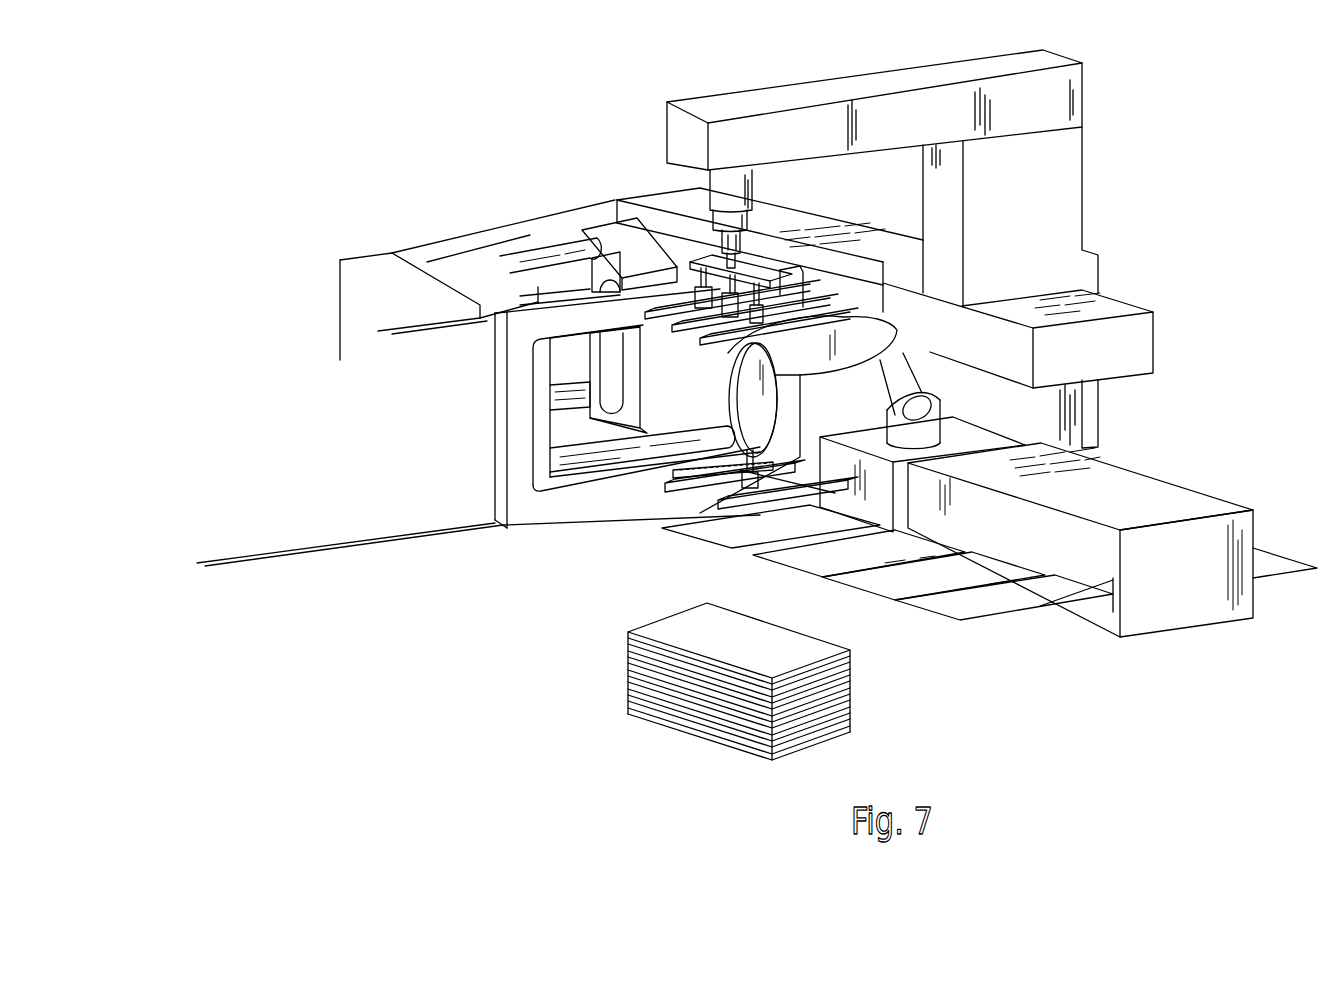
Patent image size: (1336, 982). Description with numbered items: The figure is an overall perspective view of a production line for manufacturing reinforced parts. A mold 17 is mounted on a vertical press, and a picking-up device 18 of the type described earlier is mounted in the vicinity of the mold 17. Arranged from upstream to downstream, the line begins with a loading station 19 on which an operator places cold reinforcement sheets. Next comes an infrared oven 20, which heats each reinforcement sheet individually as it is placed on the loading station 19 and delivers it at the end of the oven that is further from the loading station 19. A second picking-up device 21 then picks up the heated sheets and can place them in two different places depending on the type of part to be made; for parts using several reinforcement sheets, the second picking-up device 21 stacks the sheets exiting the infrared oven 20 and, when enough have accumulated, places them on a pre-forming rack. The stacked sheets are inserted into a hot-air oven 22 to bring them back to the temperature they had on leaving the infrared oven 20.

The mold 17 is at (600, 267).
The picking-up device 18 is at (655, 185).
The loading station 19 is at (1272, 565).
The infrared oven 20 is at (1162, 593).
The second picking-up device 21 is at (720, 397).
The hot-air oven 22 is at (887, 485).